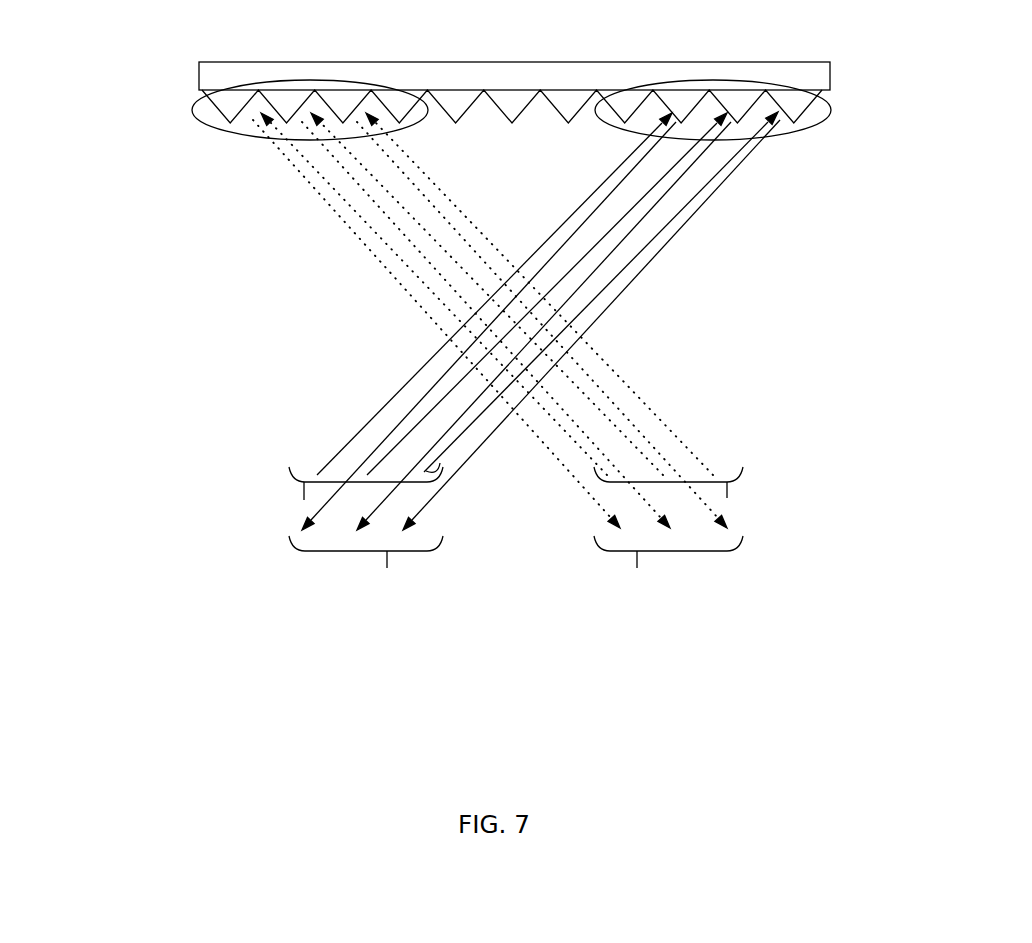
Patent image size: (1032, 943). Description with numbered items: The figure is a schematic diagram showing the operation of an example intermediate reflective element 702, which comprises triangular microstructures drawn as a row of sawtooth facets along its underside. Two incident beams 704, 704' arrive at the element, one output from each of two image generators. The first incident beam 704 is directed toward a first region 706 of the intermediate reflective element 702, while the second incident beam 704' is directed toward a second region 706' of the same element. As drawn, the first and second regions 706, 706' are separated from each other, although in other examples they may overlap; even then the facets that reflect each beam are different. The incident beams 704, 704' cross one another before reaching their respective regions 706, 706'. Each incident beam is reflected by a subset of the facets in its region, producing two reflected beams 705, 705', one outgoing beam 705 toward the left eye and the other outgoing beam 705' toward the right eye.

The intermediate reflective element 702 is at (807, 79).
The first region 706 is at (713, 85).
The second region 706' is at (310, 85).
The incident beam 704 is at (412, 341).
The incident beam 704' is at (628, 342).
The reflected beam 705 is at (534, 431).
The reflected beam 705' is at (498, 431).